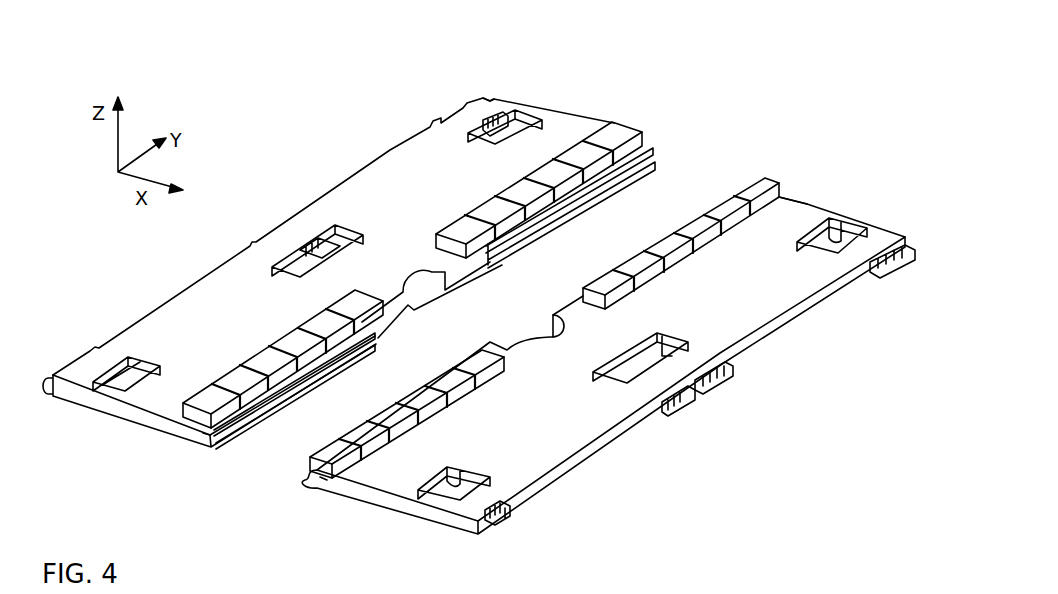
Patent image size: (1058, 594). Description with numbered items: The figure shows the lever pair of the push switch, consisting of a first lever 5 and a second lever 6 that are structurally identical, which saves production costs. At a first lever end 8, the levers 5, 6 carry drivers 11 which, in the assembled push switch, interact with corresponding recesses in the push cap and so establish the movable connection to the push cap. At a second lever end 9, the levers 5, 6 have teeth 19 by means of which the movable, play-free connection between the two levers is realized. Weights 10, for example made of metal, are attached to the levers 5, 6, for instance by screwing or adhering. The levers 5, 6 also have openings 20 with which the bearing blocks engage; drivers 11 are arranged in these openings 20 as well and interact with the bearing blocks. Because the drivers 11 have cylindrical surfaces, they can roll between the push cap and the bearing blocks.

The first lever 5 is at (494, 99).
The second lever 6 is at (807, 204).
The first lever end 8 is at (380, 173).
The second lever end 9 is at (327, 480).
The weights 10 is at (625, 127).
The drivers 11 is at (510, 117).
The teeth 19 is at (502, 265).
The openings 20 is at (340, 240).